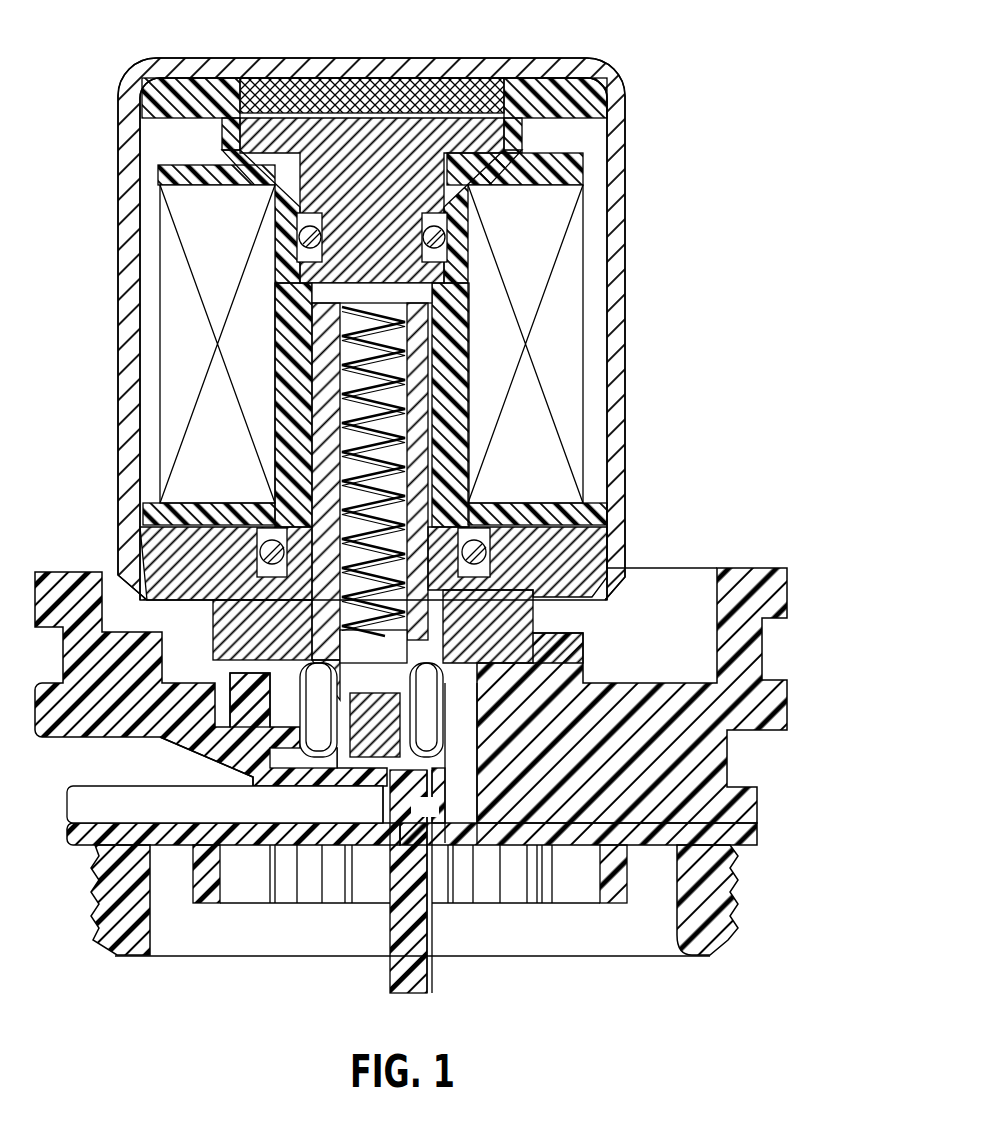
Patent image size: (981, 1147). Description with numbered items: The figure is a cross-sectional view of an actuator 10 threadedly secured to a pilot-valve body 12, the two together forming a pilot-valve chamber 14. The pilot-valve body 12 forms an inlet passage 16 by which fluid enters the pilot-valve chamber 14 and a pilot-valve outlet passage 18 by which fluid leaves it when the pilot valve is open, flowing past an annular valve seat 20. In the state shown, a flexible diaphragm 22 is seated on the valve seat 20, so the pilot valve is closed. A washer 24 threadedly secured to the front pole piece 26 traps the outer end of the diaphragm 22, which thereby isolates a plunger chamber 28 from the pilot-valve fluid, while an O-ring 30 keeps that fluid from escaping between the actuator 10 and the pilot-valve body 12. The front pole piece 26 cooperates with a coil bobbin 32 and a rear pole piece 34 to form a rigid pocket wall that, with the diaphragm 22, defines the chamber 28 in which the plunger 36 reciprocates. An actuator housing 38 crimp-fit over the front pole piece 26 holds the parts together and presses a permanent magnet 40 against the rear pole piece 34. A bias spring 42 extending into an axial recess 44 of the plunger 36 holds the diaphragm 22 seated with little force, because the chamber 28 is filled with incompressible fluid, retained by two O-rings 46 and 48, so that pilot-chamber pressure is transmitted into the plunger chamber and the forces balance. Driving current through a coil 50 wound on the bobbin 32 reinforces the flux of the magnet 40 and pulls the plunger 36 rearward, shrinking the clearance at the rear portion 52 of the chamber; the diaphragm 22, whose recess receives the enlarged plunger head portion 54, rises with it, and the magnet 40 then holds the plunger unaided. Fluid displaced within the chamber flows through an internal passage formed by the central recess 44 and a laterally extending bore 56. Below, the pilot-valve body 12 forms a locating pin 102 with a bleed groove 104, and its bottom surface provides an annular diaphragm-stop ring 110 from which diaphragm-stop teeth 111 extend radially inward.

The actuator 10 is at (702, 43).
The pilot-valve body 12 is at (727, 523).
The pilot-valve chamber 14 is at (258, 782).
The inlet passage 16 is at (463, 804).
The pilot-valve outlet passage 18 is at (374, 786).
The annular valve seat 20 is at (425, 808).
The flexible diaphragm 22 is at (300, 776).
The washer 24 is at (272, 712).
The front pole piece 26 is at (210, 607).
The plunger chamber 28 is at (445, 645).
The O-ring 30 is at (237, 753).
The coil bobbin 32 is at (593, 500).
The rear pole piece 34 is at (505, 138).
The plunger 36 is at (420, 467).
The actuator housing 38 is at (622, 274).
The permanent magnet 40 is at (462, 80).
The bias spring 42 is at (417, 334).
The axial recess 44 is at (393, 397).
The O-ring 46 is at (232, 528).
The O-ring 48 is at (297, 240).
The coil 50 is at (578, 234).
The rear portion of plunger chamber 52 is at (422, 292).
The enlarged plunger head portion 54 is at (370, 723).
The laterally extending bore 56 is at (401, 683).
The locating pin 102 is at (392, 986).
The bleed groove 104 is at (432, 993).
The annular diaphragm-stop ring 110 is at (203, 905).
The diaphragm-stop teeth 111 is at (280, 905).